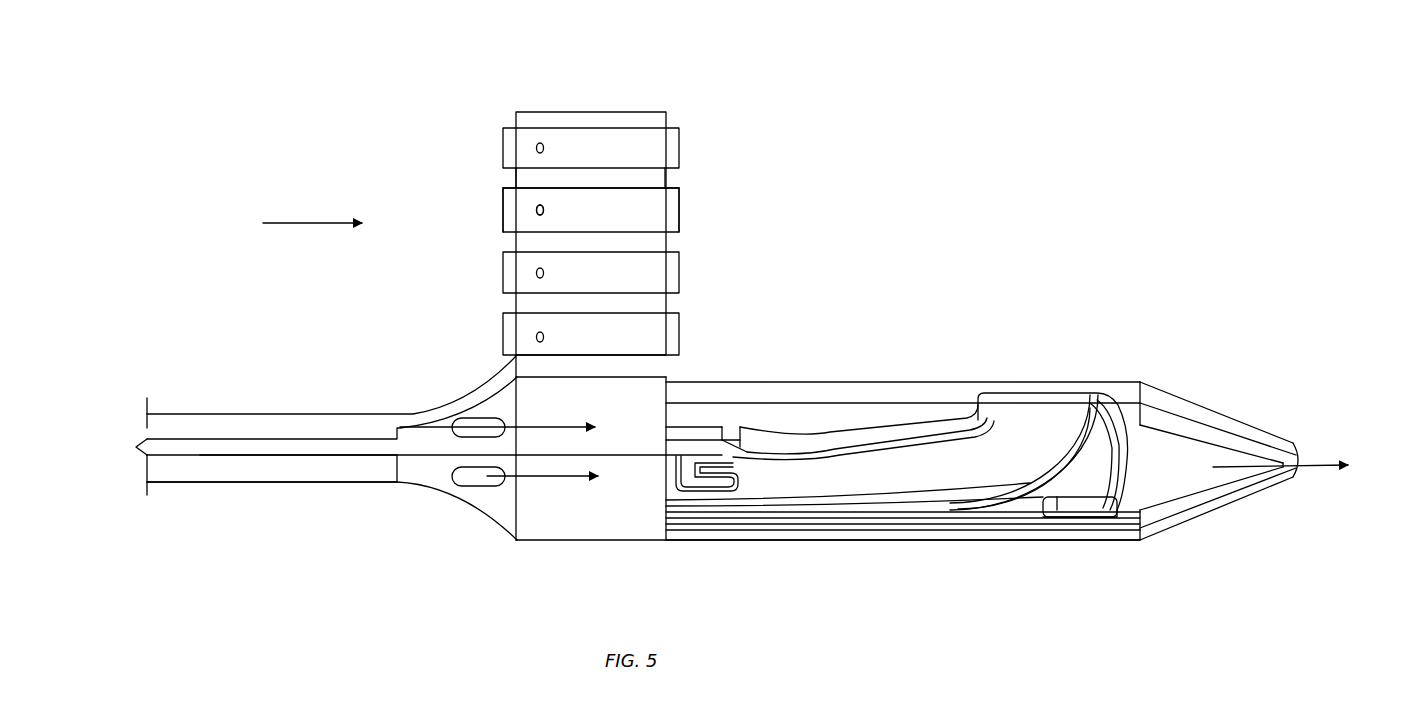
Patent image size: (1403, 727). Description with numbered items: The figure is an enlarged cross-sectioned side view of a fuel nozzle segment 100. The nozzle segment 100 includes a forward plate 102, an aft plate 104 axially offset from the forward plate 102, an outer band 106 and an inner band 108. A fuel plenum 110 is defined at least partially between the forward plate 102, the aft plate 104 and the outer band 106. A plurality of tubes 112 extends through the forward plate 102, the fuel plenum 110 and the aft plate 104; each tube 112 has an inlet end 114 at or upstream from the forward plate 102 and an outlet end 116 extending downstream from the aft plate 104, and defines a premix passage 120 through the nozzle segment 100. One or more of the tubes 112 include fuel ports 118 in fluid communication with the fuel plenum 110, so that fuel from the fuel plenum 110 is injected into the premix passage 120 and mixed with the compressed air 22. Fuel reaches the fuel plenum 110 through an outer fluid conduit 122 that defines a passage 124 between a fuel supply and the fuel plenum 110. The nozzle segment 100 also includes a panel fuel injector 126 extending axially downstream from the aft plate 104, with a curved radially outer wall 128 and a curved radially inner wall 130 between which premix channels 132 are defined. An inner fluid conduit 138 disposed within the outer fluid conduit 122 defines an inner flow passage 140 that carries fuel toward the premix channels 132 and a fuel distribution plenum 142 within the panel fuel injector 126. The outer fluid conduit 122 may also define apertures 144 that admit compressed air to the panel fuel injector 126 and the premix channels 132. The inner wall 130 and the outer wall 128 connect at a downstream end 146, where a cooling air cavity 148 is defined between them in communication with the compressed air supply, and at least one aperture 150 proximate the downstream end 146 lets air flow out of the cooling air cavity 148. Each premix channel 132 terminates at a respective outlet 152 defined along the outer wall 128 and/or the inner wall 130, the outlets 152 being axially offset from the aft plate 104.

The fuel nozzle segment 100 is at (838, 150).
The forward plate 102 is at (517, 178).
The aft plate 104 is at (665, 177).
The outer band 106 is at (595, 112).
The inner band 108 is at (633, 377).
The fuel plenum 110 is at (642, 237).
The tube 112 is at (647, 187).
The inlet end 114 is at (500, 213).
The outlet end 116 is at (683, 211).
The fuel port 118 is at (538, 218).
The premix passage 120 is at (591, 210).
The outer fluid conduit 122 is at (313, 413).
The passage 124 is at (190, 425).
The panel fuel injector 126 is at (833, 552).
The outer wall 128 is at (882, 382).
The inner wall 130 is at (923, 542).
The premix channel 132 is at (1160, 345).
The inner fluid conduit 138 is at (295, 457).
The inner flow passage 140 is at (357, 450).
The fuel distribution plenum 142 is at (693, 440).
The aperture 144 is at (468, 478).
The downstream end 146 is at (1280, 420).
The cooling air cavity 148 is at (1209, 467).
The aperture 150 is at (1297, 462).
The outlet 152 is at (1032, 373).
The compressed air 22 is at (333, 225).